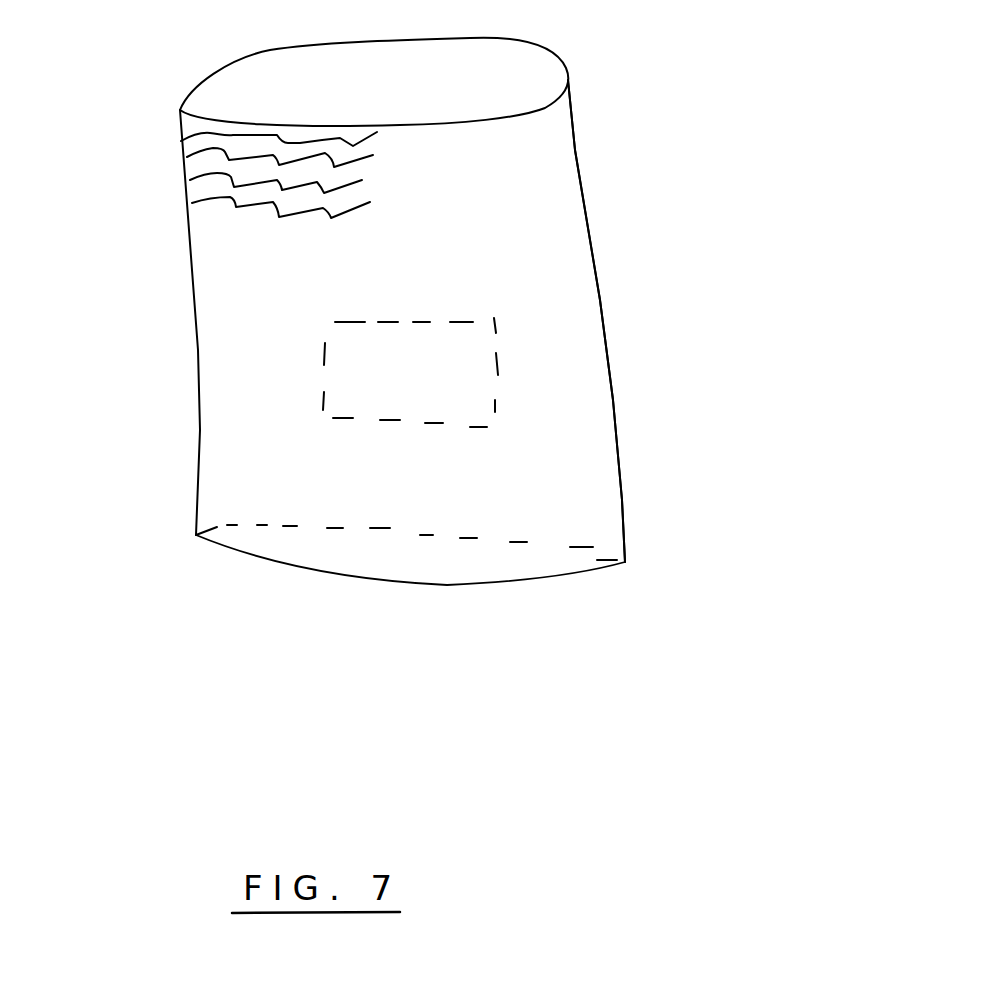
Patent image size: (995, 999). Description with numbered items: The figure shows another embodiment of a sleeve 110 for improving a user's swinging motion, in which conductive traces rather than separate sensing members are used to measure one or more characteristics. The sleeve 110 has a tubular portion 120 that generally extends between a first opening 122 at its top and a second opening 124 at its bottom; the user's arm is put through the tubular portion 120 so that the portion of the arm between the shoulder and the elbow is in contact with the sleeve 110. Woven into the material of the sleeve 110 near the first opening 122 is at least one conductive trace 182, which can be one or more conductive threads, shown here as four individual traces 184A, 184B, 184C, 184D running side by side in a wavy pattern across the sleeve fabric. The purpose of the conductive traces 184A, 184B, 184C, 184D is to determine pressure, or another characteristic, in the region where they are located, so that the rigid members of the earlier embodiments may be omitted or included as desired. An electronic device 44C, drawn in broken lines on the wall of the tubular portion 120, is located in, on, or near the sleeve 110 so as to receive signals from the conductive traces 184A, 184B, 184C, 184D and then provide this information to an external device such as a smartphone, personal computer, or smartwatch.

The sleeve 110 is at (611, 370).
The tubular portion 120 is at (525, 197).
The first opening 122 is at (457, 70).
The second opening 124 is at (527, 562).
The electronic device 44C is at (495, 405).
The conductive trace 182 is at (195, 238).
The conductive trace 184A is at (230, 258).
The conductive trace 184B is at (205, 190).
The conductive trace 184C is at (203, 161).
The conductive trace 184D is at (181, 141).